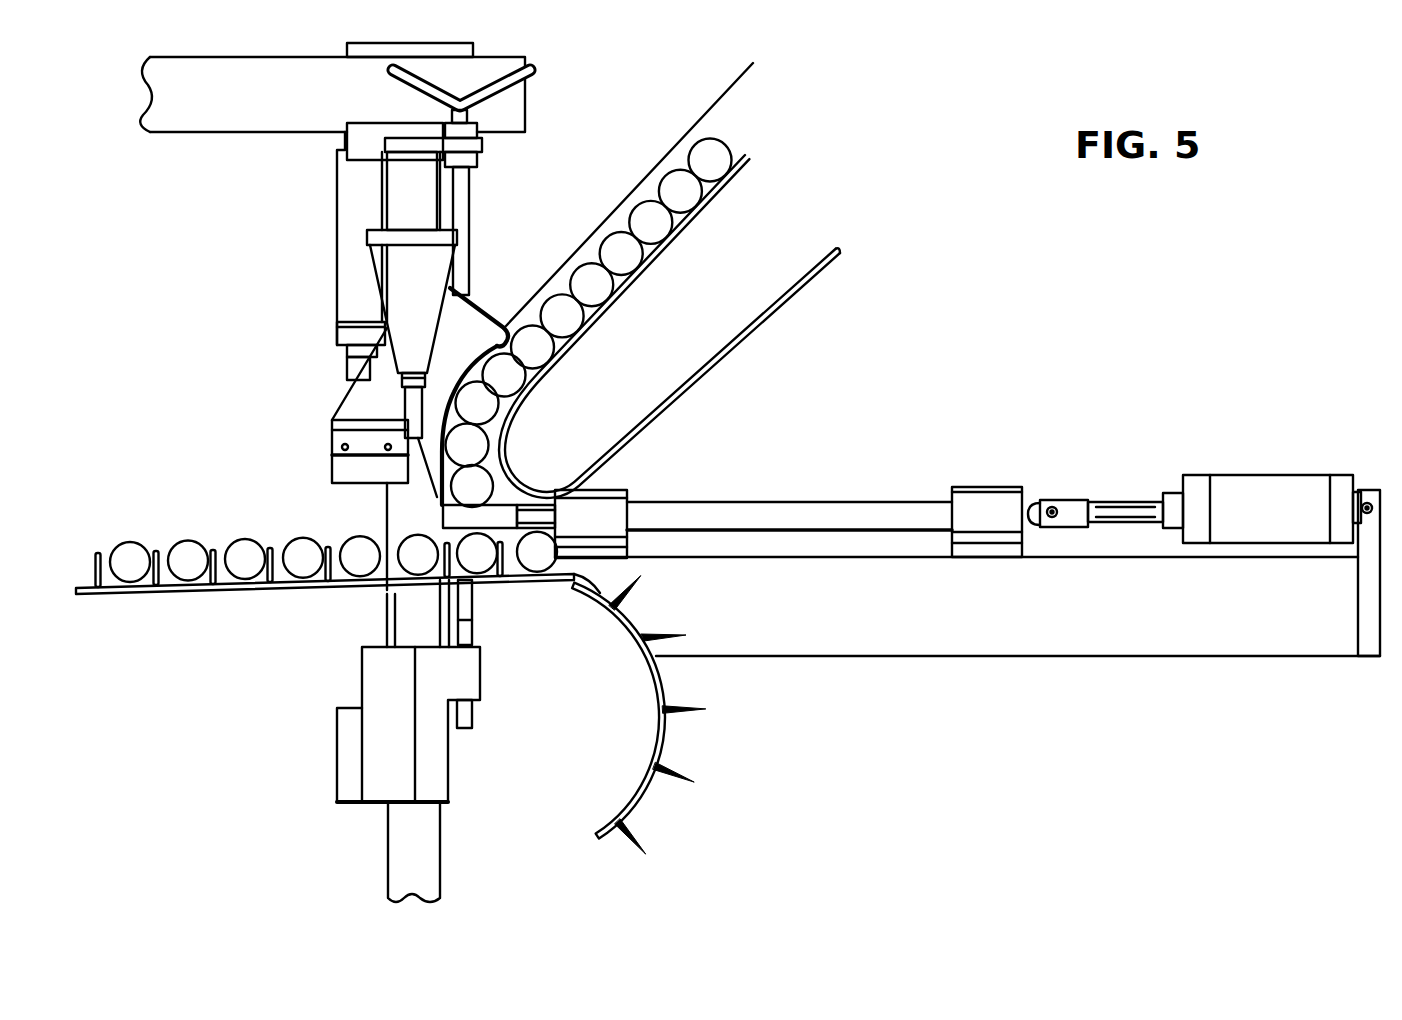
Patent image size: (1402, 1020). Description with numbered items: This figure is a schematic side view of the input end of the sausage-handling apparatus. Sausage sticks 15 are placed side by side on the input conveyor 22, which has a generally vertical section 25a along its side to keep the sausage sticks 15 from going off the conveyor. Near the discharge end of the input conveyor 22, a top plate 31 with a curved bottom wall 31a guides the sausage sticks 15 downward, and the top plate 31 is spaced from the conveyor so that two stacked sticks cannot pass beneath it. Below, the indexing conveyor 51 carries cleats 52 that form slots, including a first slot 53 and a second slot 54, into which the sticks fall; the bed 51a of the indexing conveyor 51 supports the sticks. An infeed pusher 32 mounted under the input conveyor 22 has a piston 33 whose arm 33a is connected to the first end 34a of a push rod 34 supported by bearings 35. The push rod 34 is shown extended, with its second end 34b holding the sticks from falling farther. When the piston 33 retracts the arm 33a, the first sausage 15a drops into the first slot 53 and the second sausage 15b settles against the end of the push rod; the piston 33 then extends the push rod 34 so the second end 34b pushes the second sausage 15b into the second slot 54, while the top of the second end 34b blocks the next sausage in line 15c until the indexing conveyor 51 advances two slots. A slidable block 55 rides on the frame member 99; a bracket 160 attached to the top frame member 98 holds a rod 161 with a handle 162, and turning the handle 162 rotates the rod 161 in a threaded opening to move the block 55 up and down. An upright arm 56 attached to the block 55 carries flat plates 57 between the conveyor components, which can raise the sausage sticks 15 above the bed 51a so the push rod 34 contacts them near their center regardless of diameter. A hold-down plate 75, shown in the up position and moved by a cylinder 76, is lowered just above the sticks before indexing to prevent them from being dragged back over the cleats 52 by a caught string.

The sausage sticks 15 is at (708, 155).
The first sausage 15a is at (476, 477).
The second sausage 15b is at (478, 441).
The next sausage in line 15c is at (489, 404).
The input conveyor 22 is at (712, 197).
The generally vertical section 25a is at (652, 182).
The top plate 31 is at (455, 290).
The curved bottom wall 31a is at (510, 330).
The infeed pusher 32 is at (853, 455).
The piston 33 is at (1252, 483).
The arm 33a is at (1132, 503).
The push rod 34 is at (748, 508).
The first end 34a is at (1058, 500).
The second end 34b is at (443, 508).
The bearings 35 is at (618, 488).
The indexing conveyor 51 is at (670, 755).
The bed 51a is at (288, 585).
The cleats 52 is at (213, 550).
The first slot 53 is at (640, 630).
The second slot 54 is at (600, 593).
The slidable block 55 is at (437, 775).
The upright arm 56 is at (390, 621).
The flat plates 57 is at (517, 573).
The hold-down plate 75 is at (332, 472).
The cylinder 76 is at (350, 373).
The top frame member 98 is at (424, 196).
The frame member 99 is at (427, 867).
The bracket 160 is at (483, 146).
The rod 161 is at (467, 193).
The handle 162 is at (532, 68).